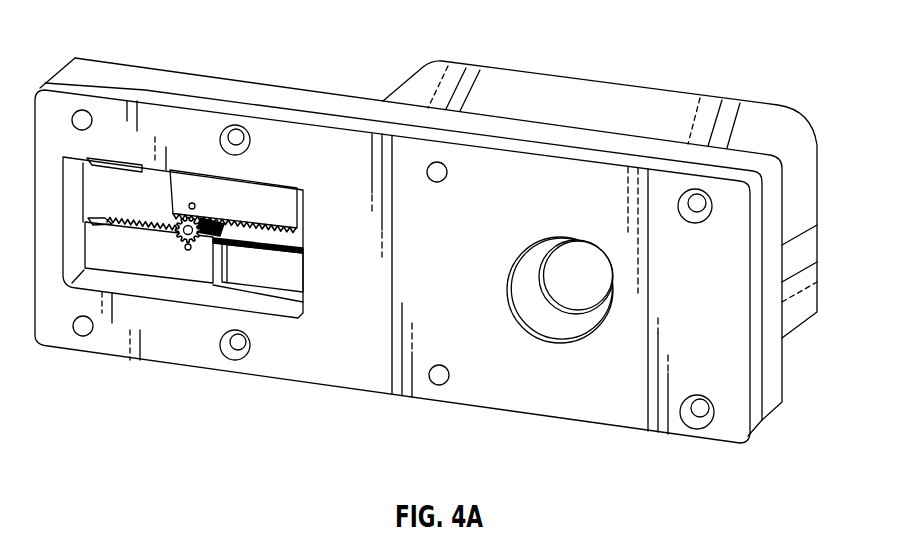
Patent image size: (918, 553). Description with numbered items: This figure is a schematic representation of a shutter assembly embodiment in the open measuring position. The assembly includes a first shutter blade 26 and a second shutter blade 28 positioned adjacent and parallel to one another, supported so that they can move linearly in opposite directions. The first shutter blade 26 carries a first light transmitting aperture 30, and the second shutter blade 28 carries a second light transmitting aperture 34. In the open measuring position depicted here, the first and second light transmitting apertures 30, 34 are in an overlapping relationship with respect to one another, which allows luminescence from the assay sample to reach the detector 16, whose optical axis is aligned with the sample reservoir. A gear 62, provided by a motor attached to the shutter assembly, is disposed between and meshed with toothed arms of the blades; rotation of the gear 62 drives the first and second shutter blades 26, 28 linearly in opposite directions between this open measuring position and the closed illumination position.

The detector 16 is at (573, 88).
The first shutter blade 26 is at (208, 280).
The second shutter blade 28 is at (260, 197).
The first light transmitting aperture 30 is at (617, 177).
The second light transmitting aperture 34 is at (577, 270).
The gear 62 is at (178, 222).